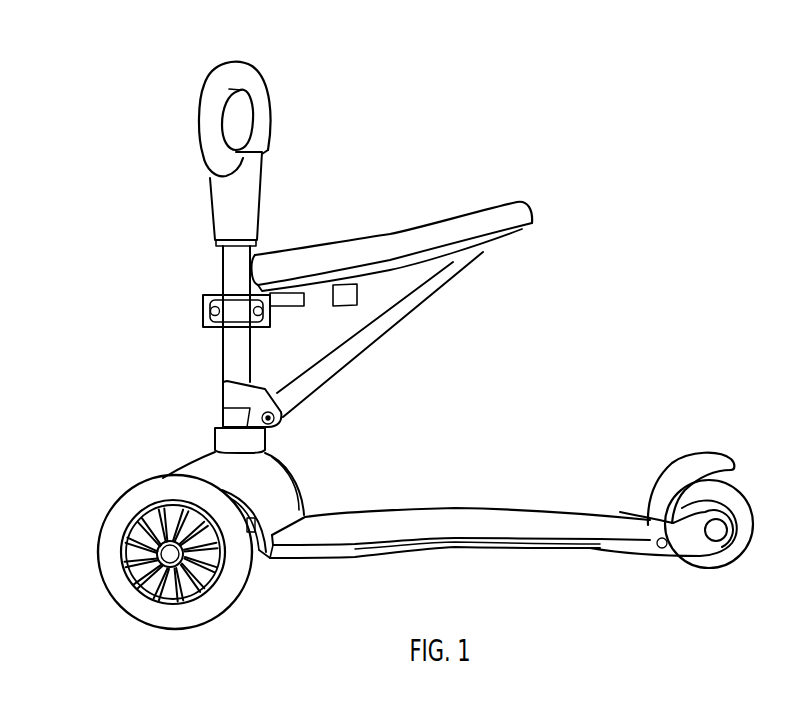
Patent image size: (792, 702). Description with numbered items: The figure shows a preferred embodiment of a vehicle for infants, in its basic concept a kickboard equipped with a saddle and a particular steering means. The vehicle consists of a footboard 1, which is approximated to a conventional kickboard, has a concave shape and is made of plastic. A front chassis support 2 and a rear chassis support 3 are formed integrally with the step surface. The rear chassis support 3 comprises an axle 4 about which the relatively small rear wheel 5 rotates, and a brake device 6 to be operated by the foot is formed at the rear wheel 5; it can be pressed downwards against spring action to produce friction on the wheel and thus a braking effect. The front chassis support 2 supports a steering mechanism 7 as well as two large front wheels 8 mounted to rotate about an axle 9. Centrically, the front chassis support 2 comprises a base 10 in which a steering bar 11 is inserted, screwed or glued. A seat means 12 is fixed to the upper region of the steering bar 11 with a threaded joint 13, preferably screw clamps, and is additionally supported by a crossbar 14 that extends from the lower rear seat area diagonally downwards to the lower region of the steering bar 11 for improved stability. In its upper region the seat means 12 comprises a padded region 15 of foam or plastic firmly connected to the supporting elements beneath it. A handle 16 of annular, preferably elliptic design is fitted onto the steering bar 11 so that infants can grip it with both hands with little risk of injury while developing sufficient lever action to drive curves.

The footboard 1 is at (476, 506).
The front chassis support 2 is at (290, 465).
The rear chassis support 3 is at (698, 543).
The axle 4 is at (730, 524).
The rear wheel 5 is at (752, 537).
The brake device 6 is at (705, 455).
The steering mechanism 7 is at (152, 502).
The front wheels 8 is at (110, 535).
The axle 9 is at (127, 517).
The base 10 is at (222, 418).
The steering bar 11 is at (220, 262).
The seat means 12 is at (490, 256).
The threaded joint 13 is at (203, 311).
The crossbar 14 is at (413, 314).
The padded region 15 is at (467, 206).
The handle 16 is at (271, 118).